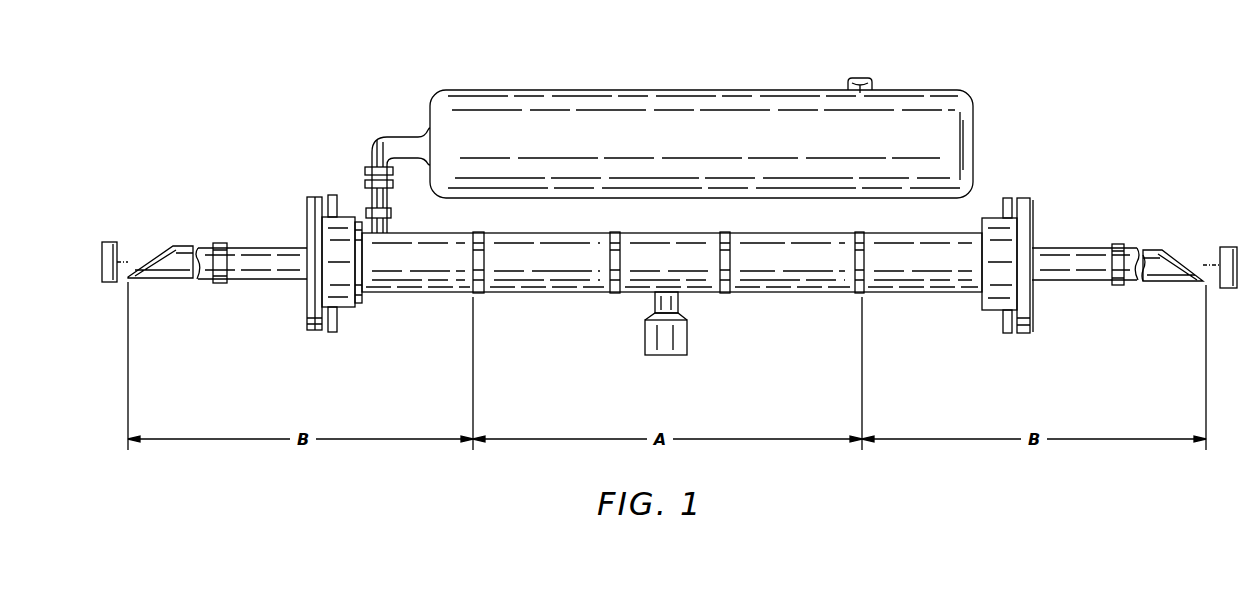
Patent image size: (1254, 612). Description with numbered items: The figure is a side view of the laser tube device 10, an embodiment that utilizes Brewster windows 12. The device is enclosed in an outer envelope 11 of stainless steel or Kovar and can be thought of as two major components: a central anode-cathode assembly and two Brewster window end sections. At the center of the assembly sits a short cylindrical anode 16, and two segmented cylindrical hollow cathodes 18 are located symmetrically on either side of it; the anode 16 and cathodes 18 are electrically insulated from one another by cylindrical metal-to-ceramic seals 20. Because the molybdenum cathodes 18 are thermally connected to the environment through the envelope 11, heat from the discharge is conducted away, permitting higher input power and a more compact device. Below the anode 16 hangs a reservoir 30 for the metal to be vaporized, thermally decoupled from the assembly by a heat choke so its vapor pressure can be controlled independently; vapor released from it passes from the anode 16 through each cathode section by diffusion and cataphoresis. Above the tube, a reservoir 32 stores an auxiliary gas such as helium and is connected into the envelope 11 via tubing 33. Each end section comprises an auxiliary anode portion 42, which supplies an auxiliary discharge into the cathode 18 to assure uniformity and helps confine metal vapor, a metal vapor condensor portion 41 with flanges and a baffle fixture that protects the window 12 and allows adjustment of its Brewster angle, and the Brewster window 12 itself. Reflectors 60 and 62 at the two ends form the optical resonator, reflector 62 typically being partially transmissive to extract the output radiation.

The laser tube device 10 is at (982, 197).
The outer envelope 11 is at (516, 294).
The Brewster window 12 is at (156, 252).
The anode 16 is at (671, 243).
The cathode 18 is at (541, 243).
The metal-to-ceramic seal 20 is at (478, 232).
The reservoir 30 is at (644, 336).
The reservoir 32 is at (698, 90).
The tubing 33 is at (384, 147).
The metal vapor condensor portion 41 is at (322, 331).
The auxiliary anode portion 42 is at (406, 293).
The reflector 60 is at (115, 240).
The reflector 62 is at (1215, 247).